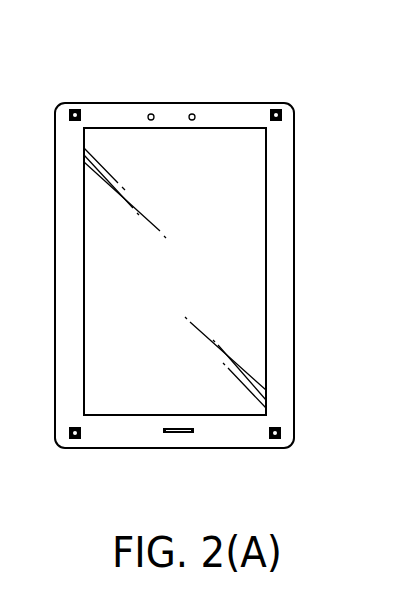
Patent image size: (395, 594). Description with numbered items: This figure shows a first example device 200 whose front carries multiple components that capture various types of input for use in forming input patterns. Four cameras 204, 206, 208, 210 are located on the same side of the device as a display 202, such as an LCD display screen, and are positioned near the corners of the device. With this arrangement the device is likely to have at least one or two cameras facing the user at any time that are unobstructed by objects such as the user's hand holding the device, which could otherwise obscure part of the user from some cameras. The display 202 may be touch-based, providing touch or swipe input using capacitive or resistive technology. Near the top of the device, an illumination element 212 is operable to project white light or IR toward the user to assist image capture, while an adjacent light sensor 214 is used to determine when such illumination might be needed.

The first example device 200 is at (355, 95).
The display 202 is at (84, 137).
The camera 204 is at (73, 108).
The camera 206 is at (280, 108).
The camera 208 is at (74, 440).
The camera 210 is at (276, 440).
The illumination element 212 is at (149, 114).
The light sensor 214 is at (195, 114).